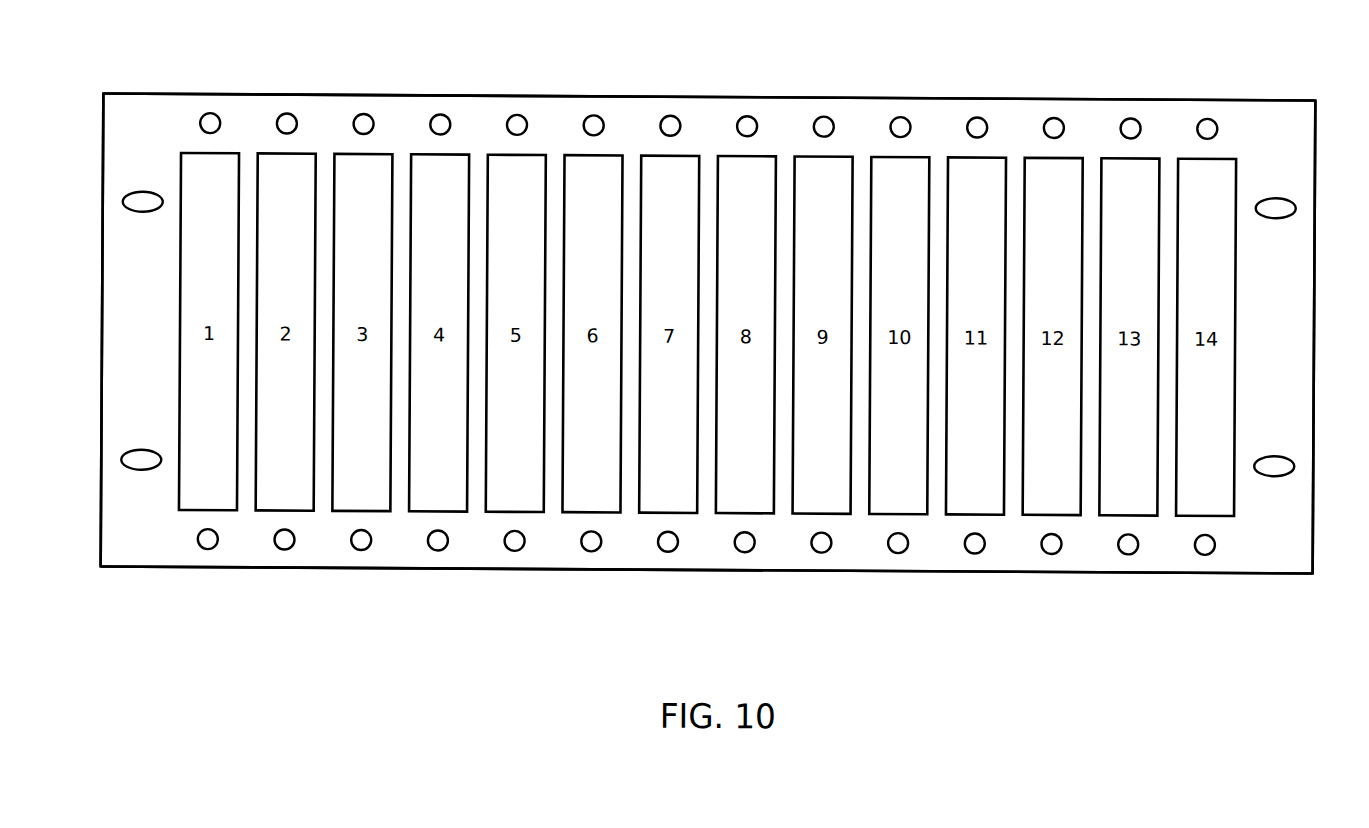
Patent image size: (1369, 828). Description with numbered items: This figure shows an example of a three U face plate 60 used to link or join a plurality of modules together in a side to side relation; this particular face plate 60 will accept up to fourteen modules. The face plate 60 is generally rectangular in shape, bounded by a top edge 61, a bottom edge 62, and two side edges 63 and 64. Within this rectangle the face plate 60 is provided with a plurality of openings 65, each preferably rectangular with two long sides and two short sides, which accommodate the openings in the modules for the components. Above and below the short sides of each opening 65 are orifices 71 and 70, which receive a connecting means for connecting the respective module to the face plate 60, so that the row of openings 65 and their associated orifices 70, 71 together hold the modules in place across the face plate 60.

The face plate 60 is at (323, 96).
The top edge 61 is at (592, 97).
The bottom edge 62 is at (552, 572).
The side edge 63 is at (102, 309).
The side edge 64 is at (1314, 415).
The opening 65 is at (524, 176).
The orifice 70 is at (822, 552).
The orifice 71 is at (822, 126).